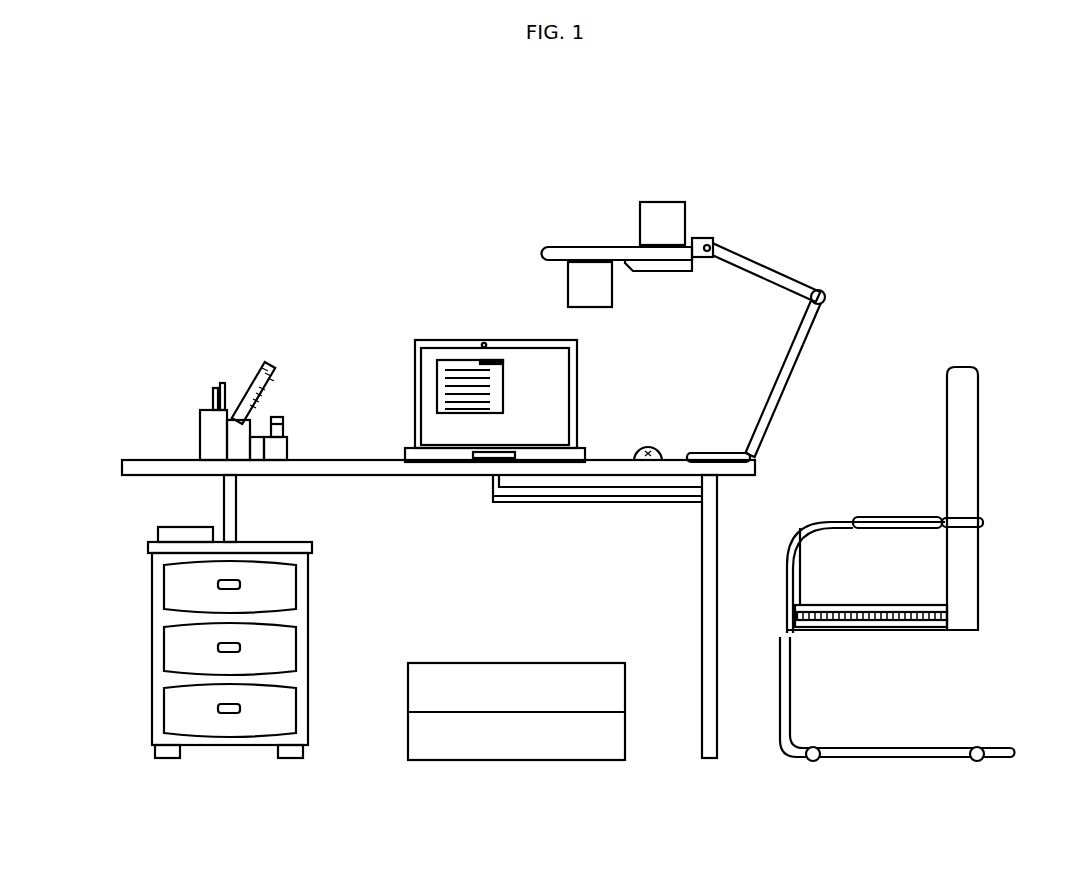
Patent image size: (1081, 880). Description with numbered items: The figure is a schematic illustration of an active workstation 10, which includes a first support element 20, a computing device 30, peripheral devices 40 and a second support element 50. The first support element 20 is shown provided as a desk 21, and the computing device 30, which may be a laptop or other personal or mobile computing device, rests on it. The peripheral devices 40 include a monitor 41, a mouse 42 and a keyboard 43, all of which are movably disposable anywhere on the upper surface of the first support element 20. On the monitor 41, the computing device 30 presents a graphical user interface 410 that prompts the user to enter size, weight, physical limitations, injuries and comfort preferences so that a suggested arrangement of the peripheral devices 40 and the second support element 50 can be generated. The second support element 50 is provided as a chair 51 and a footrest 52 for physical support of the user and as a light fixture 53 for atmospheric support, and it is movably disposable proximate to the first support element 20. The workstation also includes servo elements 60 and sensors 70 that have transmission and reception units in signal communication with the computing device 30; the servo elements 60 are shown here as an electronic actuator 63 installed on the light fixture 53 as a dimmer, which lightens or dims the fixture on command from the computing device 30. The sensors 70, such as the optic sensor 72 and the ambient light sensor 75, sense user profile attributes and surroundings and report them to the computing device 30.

The active workstation 10 is at (275, 283).
The first support element 20 is at (438, 560).
The desk 21 is at (362, 477).
The computing device 30 is at (482, 365).
The peripheral devices 40 is at (585, 434).
The monitor 41 is at (426, 370).
The graphical user interface 410 is at (463, 375).
The mouse 42 is at (657, 455).
The keyboard 43 is at (518, 497).
The second support element 50 is at (689, 586).
The chair 51 is at (960, 585).
The footrest 52 is at (428, 690).
The light fixture 53 is at (684, 332).
The servo elements 60 is at (975, 752).
The electronic actuator 63 is at (651, 233).
The sensors 70 is at (847, 614).
The optic sensor 72 is at (486, 344).
The ambient light sensor 75 is at (579, 294).